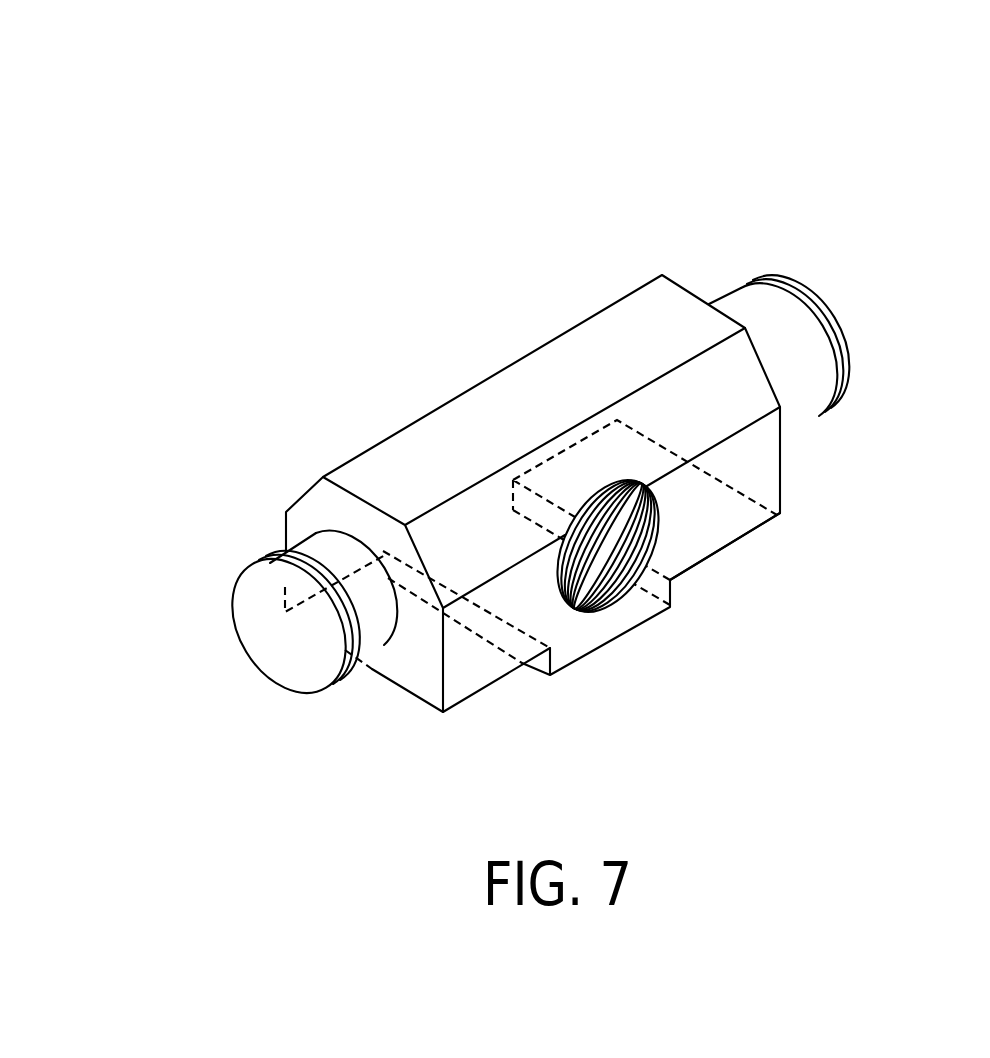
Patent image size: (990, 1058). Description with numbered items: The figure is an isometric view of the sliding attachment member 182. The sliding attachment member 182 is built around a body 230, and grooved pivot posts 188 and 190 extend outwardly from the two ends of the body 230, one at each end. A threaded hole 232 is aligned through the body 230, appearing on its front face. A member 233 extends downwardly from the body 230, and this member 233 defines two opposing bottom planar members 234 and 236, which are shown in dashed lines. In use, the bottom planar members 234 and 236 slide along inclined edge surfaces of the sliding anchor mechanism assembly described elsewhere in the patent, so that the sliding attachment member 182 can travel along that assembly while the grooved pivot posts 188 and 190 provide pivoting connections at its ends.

The sliding attachment member 182 is at (545, 428).
The grooved pivot post 188 is at (250, 628).
The grooved pivot post 190 is at (790, 332).
The body 230 is at (578, 342).
The threaded hole 232 is at (607, 590).
The member 233 is at (580, 650).
The bottom planar member 234 is at (488, 688).
The bottom planar member 236 is at (723, 550).